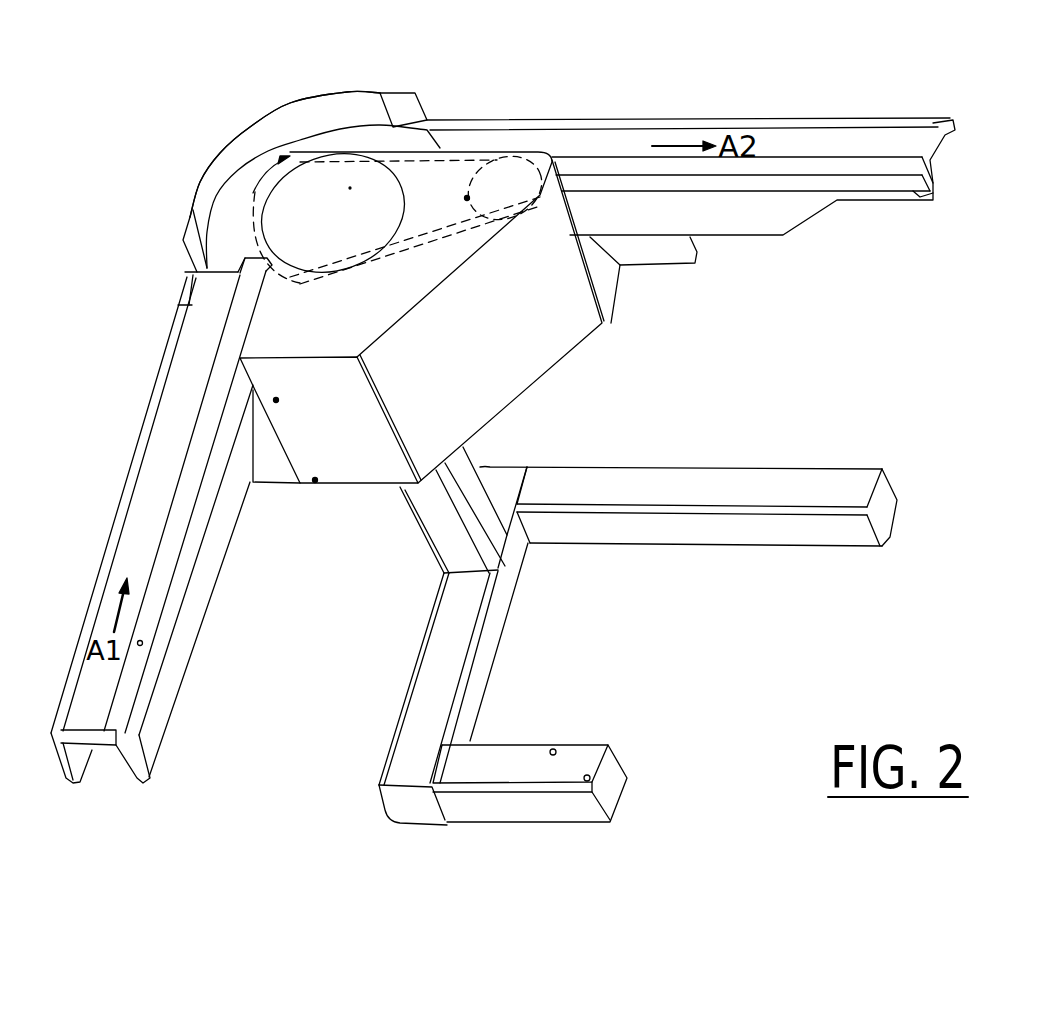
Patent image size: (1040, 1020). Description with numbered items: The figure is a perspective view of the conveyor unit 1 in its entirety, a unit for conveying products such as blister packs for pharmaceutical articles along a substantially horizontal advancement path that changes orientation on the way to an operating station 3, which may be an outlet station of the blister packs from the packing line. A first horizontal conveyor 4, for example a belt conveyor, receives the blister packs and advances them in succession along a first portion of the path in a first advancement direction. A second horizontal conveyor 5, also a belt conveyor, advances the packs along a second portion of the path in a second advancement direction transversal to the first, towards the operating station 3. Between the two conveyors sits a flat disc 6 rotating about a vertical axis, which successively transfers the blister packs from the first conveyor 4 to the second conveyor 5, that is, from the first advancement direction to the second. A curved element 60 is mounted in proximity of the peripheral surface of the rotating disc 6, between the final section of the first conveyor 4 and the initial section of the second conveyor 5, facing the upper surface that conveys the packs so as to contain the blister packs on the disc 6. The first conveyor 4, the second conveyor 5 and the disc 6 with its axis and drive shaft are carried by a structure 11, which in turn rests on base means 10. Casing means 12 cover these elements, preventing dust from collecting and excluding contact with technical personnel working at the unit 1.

The conveyor unit 1 is at (298, 86).
The curved element 60 is at (227, 160).
The flat disc 6 is at (227, 235).
The casing means 12 is at (322, 338).
The structure 11 is at (533, 340).
The second horizontal conveyor 5 is at (842, 118).
The operating station 3 is at (972, 182).
The first horizontal conveyor 4 is at (110, 543).
The base means 10 is at (610, 577).